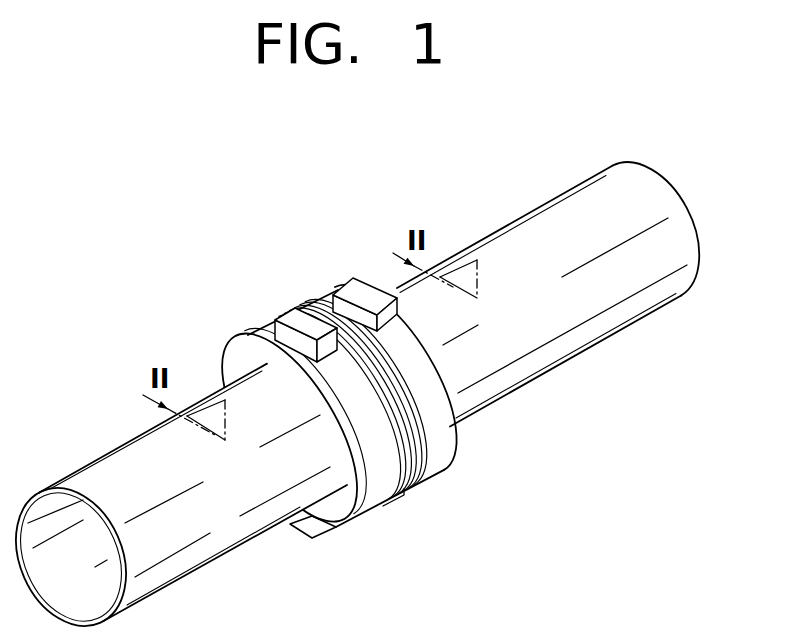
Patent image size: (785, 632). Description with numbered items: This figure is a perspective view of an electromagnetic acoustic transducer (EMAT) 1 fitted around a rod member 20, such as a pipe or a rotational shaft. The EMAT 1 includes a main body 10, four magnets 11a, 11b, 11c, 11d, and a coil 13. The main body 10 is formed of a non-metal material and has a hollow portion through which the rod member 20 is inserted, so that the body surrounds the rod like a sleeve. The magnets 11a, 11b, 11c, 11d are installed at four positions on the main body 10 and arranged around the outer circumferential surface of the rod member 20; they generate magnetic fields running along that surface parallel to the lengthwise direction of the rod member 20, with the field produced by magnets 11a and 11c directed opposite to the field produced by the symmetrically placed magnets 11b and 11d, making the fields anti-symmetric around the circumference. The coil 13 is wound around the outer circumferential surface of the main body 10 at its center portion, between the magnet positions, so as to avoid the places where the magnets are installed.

The electromagnetic acoustic transducer 1 is at (349, 397).
The main body 10 is at (341, 408).
The magnet 11a is at (292, 322).
The magnet 11b is at (310, 538).
The magnet 11c is at (358, 287).
The magnet 11d is at (385, 500).
The coil 13 is at (423, 474).
The rod member 20 is at (143, 447).